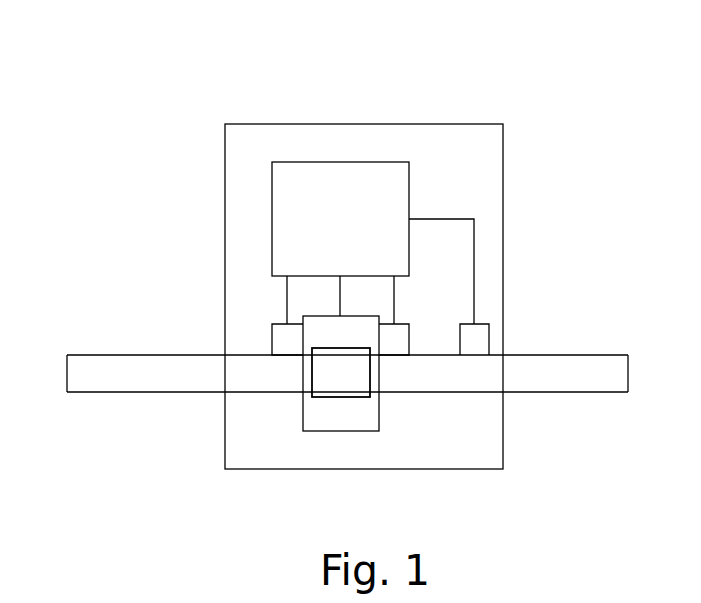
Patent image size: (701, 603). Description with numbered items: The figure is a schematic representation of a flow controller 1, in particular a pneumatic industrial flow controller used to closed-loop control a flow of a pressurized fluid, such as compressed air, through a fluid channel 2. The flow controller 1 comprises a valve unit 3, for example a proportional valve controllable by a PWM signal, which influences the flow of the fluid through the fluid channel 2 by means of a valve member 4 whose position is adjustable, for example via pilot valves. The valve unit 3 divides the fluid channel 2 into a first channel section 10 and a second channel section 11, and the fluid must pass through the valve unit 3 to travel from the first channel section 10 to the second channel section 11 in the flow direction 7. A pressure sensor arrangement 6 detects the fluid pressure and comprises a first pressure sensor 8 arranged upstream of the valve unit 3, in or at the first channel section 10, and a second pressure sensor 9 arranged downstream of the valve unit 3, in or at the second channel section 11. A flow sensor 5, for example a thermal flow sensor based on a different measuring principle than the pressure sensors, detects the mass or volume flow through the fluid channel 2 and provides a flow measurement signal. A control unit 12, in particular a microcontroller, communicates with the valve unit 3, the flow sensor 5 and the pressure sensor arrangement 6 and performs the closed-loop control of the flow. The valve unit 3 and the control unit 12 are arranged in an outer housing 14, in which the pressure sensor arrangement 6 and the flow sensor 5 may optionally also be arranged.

The flow controller 1 is at (142, 93).
The fluid channel 2 is at (364, 337).
The valve unit 3 is at (313, 431).
The valve member 4 is at (349, 385).
The flow sensor 5 is at (478, 338).
The pressure sensor arrangement 6 is at (304, 389).
The flow direction 7 is at (245, 374).
The first pressure sensor 8 is at (280, 339).
The second pressure sensor 9 is at (393, 345).
The first channel section 10 is at (107, 353).
The second channel section 11 is at (607, 353).
The control unit 12 is at (353, 231).
The outer housing 14 is at (460, 123).